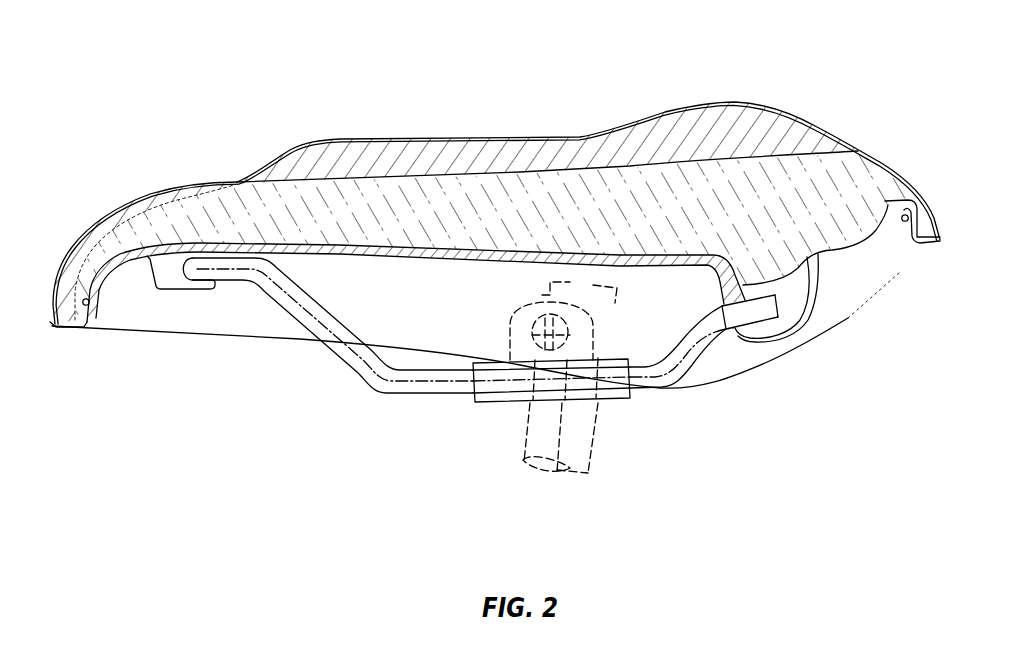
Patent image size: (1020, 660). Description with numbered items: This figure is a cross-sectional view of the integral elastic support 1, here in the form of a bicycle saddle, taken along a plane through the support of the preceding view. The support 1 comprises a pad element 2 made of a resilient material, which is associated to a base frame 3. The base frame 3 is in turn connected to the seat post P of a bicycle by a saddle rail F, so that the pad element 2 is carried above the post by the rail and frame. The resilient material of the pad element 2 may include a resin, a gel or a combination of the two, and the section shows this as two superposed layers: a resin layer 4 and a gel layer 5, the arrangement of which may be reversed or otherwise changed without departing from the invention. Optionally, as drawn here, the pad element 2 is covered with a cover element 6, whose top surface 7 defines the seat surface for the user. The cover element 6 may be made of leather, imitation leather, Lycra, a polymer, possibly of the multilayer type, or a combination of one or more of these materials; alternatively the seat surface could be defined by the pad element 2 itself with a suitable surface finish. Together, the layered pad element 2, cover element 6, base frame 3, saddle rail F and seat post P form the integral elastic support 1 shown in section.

The integral elastic support 1 is at (277, 84).
The pad element 2 is at (652, 98).
The base frame 3 is at (848, 297).
The resin layer 4 is at (160, 228).
The gel layer 5 is at (465, 160).
The cover element 6 is at (795, 113).
The top surface 7 is at (912, 178).
The saddle rail F is at (358, 366).
The seat post P is at (548, 438).